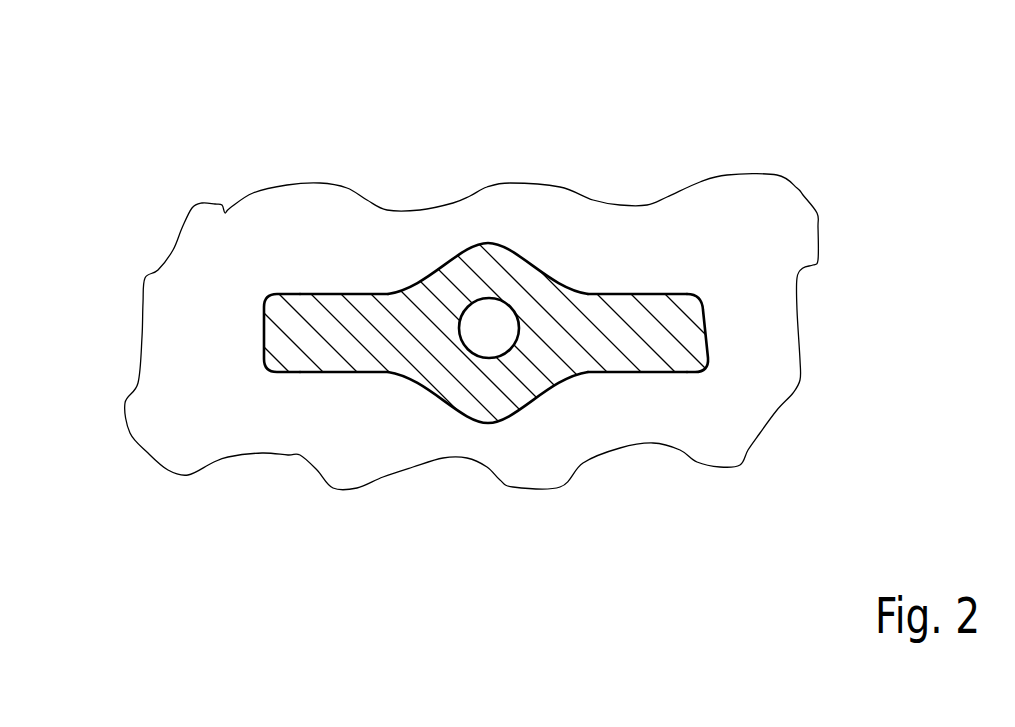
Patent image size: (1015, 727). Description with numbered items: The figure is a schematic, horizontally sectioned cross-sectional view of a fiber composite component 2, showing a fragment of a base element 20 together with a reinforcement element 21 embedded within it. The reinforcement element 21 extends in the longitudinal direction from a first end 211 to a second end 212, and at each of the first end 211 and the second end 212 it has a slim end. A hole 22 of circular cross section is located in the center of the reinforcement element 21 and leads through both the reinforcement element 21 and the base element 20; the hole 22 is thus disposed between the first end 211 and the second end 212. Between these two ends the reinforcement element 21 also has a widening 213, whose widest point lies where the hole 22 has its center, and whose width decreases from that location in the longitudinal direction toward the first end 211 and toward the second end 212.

The fiber composite component 2 is at (845, 109).
The base element 20 is at (831, 208).
The reinforcement element 21 is at (717, 328).
The hole 22 is at (487, 297).
The first end 211 is at (295, 363).
The second end 212 is at (677, 372).
The widening 213 is at (522, 263).